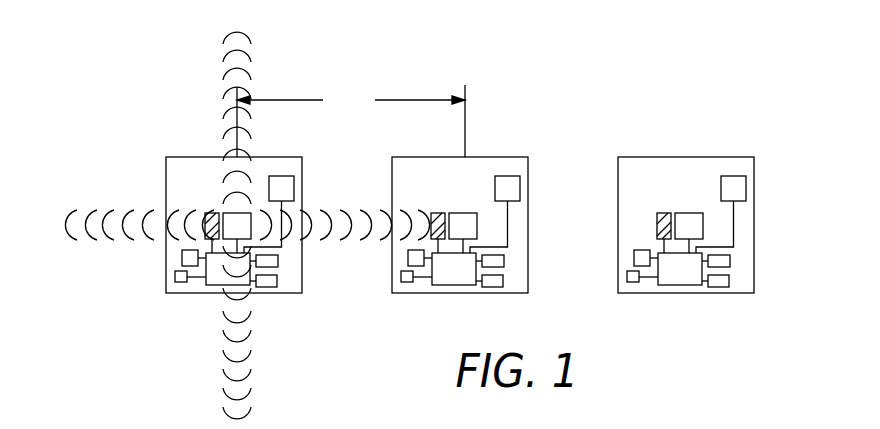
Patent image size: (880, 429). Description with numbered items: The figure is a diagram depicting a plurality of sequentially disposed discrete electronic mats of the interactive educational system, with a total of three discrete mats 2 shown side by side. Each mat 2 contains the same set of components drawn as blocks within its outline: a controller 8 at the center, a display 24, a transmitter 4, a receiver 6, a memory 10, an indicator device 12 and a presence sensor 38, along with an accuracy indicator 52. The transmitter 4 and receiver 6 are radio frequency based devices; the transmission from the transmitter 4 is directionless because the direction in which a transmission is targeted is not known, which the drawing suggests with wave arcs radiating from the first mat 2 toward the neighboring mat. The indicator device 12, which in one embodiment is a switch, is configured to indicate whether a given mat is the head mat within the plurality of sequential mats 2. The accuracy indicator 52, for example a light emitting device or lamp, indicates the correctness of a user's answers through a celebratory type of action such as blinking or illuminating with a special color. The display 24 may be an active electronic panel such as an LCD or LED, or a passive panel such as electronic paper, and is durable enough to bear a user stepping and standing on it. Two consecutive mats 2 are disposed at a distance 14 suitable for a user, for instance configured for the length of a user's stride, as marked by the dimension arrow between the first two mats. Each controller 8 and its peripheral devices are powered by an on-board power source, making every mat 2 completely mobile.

The discrete electronic mat 2 is at (456, 250).
The transmitter 4 is at (438, 192).
The receiver 6 is at (407, 211).
The controller 8 is at (451, 294).
The memory 10 is at (480, 305).
The indicator device 12 is at (388, 293).
The distance 14 is at (338, 110).
The display 24 is at (394, 264).
The presence sensor 38 is at (520, 272).
The accuracy indicator 52 is at (519, 214).